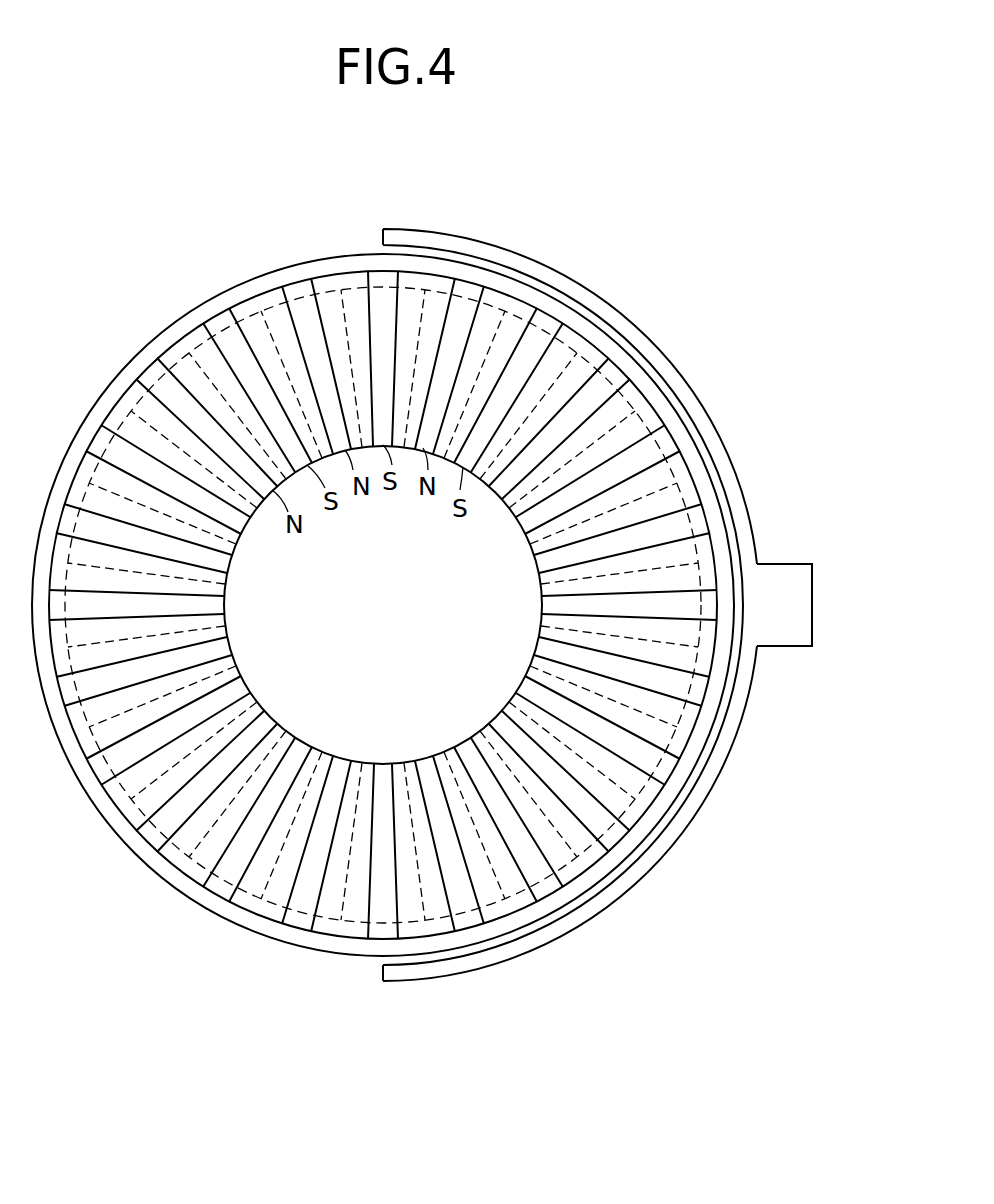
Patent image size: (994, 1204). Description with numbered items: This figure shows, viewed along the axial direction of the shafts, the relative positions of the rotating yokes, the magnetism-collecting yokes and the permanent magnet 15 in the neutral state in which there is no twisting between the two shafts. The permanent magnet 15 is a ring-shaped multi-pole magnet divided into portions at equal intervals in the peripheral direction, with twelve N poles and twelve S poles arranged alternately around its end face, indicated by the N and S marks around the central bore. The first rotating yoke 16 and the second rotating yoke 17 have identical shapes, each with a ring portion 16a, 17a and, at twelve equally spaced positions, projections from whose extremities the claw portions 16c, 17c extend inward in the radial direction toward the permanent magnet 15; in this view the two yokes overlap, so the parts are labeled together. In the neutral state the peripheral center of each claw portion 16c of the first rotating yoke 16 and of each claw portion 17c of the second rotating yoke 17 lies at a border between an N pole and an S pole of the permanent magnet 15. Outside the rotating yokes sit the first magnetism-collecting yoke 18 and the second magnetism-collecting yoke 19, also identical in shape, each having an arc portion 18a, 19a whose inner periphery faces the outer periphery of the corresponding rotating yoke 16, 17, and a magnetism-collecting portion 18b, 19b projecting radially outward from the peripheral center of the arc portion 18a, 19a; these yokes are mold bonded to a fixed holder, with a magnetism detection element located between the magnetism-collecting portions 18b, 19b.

The permanent magnet 15 is at (303, 302).
The first rotating yoke 16 is at (383, 612).
The ring portion 16a is at (303, 943).
The claw portions 16c is at (262, 328).
The second rotating yoke 17 is at (383, 612).
The ring portion 17a is at (383, 659).
The claw portions 17c is at (193, 387).
The first magnetism-collecting yoke 18 is at (618, 605).
The arc portion 18a is at (660, 348).
The magnetism-collecting portion 18b is at (783, 628).
The second magnetism-collecting yoke 19 is at (618, 605).
The arc portion 19a is at (570, 605).
The magnetism-collecting portion 19b is at (805, 646).